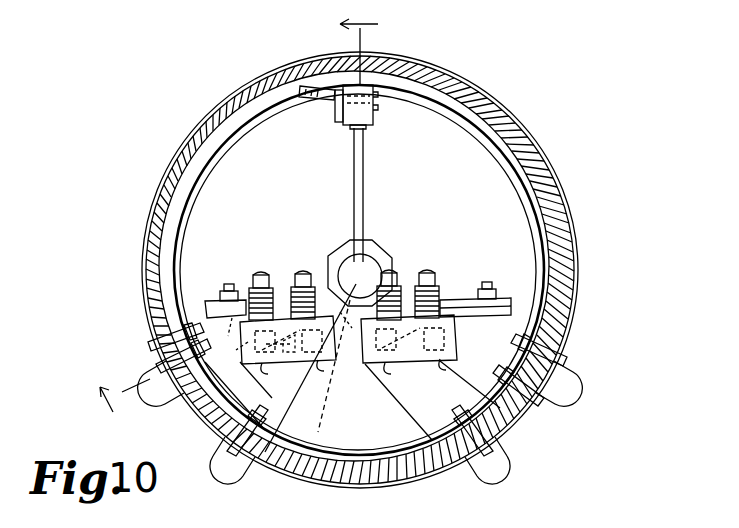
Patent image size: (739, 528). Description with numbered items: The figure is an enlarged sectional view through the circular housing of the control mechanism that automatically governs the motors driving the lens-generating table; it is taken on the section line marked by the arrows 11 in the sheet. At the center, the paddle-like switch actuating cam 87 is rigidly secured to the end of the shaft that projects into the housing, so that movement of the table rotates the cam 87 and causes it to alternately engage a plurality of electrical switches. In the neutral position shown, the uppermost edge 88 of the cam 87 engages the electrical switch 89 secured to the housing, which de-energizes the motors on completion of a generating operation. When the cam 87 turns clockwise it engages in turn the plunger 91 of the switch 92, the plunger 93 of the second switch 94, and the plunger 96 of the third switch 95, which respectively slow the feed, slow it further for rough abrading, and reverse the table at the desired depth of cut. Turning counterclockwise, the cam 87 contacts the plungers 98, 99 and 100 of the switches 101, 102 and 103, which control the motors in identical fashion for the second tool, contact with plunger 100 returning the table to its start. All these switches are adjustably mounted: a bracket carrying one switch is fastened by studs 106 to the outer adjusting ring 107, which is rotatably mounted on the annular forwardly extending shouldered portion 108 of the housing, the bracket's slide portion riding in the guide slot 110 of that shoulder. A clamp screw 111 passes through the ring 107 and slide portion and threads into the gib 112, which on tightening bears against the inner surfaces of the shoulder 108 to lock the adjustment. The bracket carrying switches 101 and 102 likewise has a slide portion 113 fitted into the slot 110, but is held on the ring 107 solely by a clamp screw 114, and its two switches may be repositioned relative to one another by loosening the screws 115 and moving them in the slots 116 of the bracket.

The section line 11 is at (250, 219).
The switch actuating cam 87 is at (366, 193).
The uppermost edge 88 is at (352, 129).
The electrical switch 89 is at (368, 116).
The plunger 91 is at (398, 272).
The electrical switch 92 is at (414, 363).
The plunger 93 is at (434, 273).
The second electrical switch 94 is at (442, 299).
The third electrical switch 95 is at (506, 310).
The plunger 96 is at (490, 289).
The plunger 98 is at (303, 274).
The plunger 99 is at (262, 275).
The plunger 100 is at (229, 284).
The switch 101 is at (282, 364).
The switch 102 is at (280, 395).
The switch 103 is at (212, 302).
The studs 106 is at (160, 342).
The outer adjusting ring 107 is at (150, 282).
The annular shouldered portion 108 is at (560, 275).
The guide slot 110 is at (170, 238).
The clamp screw 111 is at (166, 364).
The gib 112 is at (228, 322).
The slide portion 113 is at (266, 440).
The clamp screw 114 is at (230, 470).
The screws 115 is at (284, 345).
The slots 116 is at (242, 344).